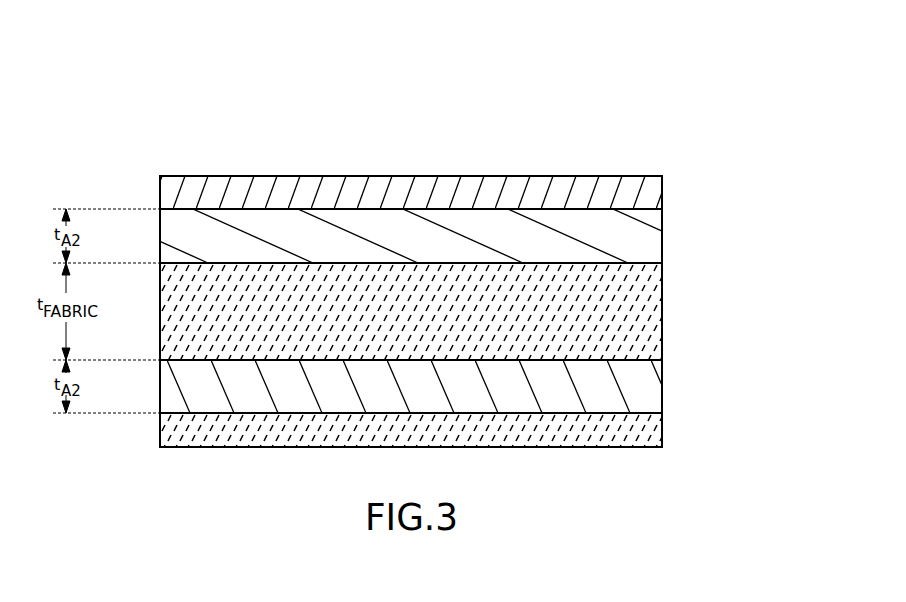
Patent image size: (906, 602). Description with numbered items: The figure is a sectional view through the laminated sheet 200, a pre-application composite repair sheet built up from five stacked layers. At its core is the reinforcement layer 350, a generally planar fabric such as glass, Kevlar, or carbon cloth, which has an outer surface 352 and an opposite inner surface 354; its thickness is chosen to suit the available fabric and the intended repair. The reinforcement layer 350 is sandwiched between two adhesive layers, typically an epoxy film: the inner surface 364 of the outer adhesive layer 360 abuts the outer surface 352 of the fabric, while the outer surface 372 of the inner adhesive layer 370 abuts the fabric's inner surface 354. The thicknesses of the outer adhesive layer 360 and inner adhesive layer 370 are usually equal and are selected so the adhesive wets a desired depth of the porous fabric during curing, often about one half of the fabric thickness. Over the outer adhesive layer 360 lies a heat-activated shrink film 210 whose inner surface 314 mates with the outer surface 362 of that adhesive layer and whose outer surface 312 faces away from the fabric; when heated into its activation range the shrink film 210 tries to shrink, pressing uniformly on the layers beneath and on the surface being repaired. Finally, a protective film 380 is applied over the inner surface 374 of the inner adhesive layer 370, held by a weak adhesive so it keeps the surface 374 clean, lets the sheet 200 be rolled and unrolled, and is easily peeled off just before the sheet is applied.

The laminated sheet 200 is at (190, 88).
The heat-activated shrink film 210 is at (677, 188).
The outer surface of shrink film 312 is at (571, 176).
The inner surface of shrink film 314 is at (623, 210).
The outer adhesive layer 360 is at (677, 244).
The outer surface of outer adhesive layer 362 is at (172, 209).
The inner surface of outer adhesive layer 364 is at (178, 263).
The reinforcement layer 350 is at (677, 328).
The outer surface of reinforcement layer 352 is at (628, 263).
The inner surface of reinforcement layer 354 is at (624, 361).
The inner adhesive layer 370 is at (677, 391).
The outer surface of inner adhesive layer 372 is at (176, 360).
The inner surface of inner adhesive layer 374 is at (170, 413).
The protective film 380 is at (677, 431).